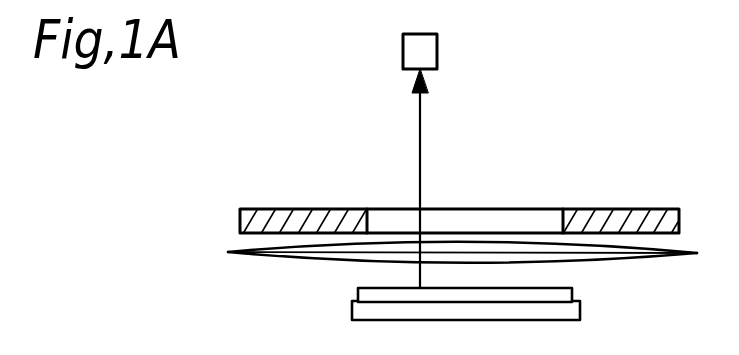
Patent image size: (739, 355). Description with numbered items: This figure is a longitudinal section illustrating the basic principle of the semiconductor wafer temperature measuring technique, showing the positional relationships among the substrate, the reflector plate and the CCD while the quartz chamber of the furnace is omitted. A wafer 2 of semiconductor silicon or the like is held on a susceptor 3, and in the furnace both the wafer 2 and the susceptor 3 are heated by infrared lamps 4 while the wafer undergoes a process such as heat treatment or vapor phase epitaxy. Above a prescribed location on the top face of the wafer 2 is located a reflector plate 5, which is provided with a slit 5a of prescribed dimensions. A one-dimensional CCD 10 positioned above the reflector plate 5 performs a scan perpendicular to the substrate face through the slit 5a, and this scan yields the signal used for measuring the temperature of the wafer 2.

The one-dimensional CCD 10 is at (437, 46).
The reflector plate 5 is at (652, 209).
The slit 5a is at (563, 222).
The infrared lamps 4 is at (647, 258).
The wafer 2 is at (358, 294).
The susceptor 3 is at (352, 312).